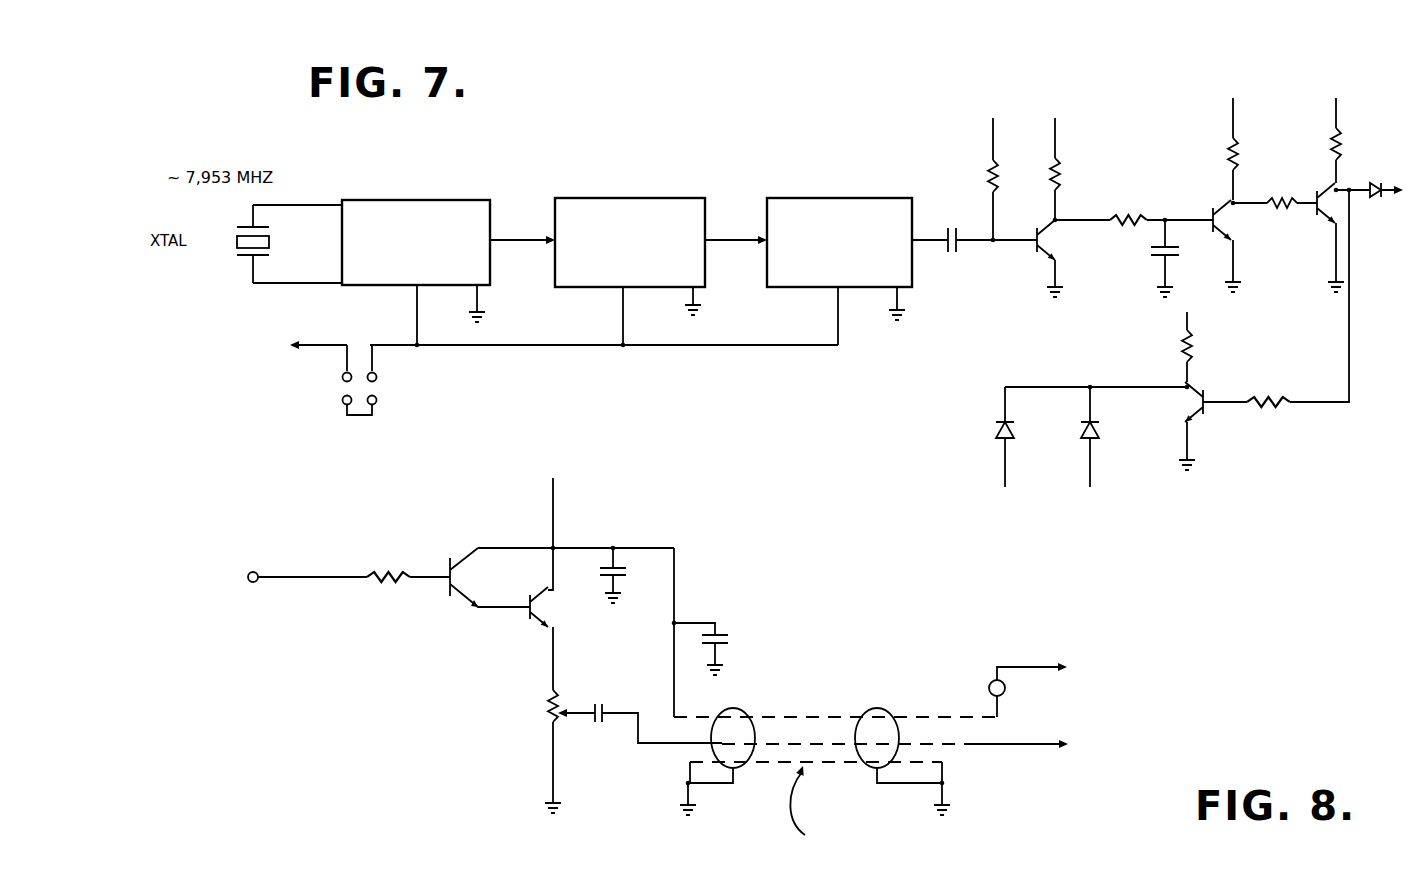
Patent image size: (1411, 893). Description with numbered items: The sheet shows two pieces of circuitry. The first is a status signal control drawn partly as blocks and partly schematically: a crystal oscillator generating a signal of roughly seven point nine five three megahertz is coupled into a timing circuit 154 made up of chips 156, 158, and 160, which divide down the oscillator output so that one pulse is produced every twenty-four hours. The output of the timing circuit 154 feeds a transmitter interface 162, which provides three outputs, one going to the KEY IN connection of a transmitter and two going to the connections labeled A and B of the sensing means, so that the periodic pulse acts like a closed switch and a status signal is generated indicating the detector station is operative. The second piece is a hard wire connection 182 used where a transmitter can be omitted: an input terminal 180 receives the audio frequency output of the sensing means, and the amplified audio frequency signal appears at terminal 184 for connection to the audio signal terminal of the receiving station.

In FIG. 7, the timing circuit 154 is at (668, 150).
In FIG. 7, the chip 156 is at (478, 200).
In FIG. 7, the chip 158 is at (700, 198).
In FIG. 7, the chip 160 is at (778, 198).
In FIG. 7, the transmitter interface 162 is at (1123, 76).
In FIG. 8, the input terminal 180 is at (251, 583).
In FIG. 8, the hard wire connection 182 is at (824, 525).
In FIG. 8, the terminal 184 is at (1072, 752).